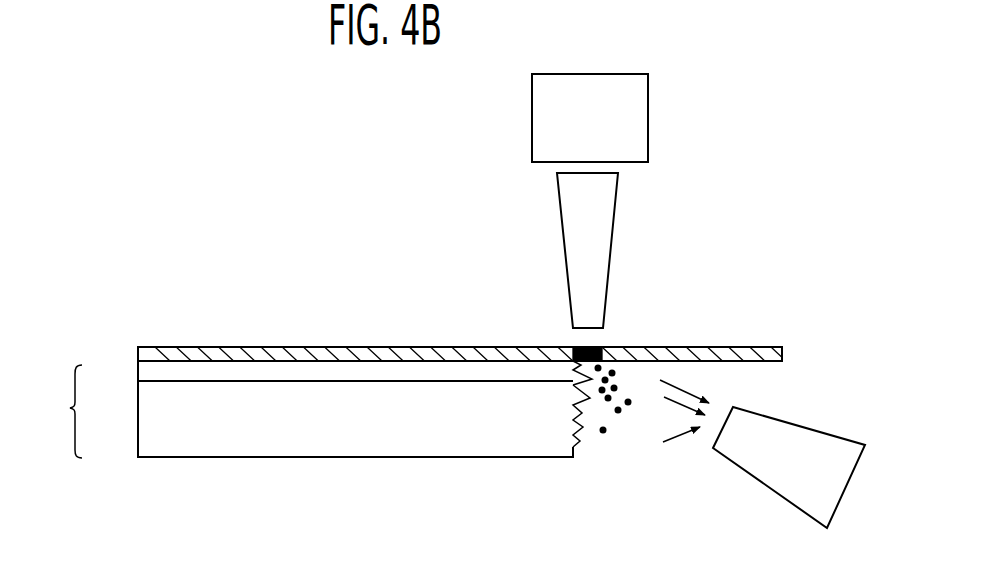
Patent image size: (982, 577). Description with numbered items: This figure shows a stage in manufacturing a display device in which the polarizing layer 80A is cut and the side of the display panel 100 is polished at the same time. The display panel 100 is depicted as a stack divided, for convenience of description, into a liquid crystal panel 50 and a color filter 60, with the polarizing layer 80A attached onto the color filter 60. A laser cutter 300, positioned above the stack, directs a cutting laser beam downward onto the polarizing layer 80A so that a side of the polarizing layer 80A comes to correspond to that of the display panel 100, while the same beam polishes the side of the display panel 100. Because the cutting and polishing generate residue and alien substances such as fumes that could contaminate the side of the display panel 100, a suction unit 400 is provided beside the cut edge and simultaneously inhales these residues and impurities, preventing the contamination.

The laser cutter 300 is at (532, 118).
The polarizing layer 80A is at (138, 352).
The display panel 100 is at (315, 410).
The color filter 60 is at (143, 372).
The liquid crystal panel 50 is at (143, 436).
The suction unit 400 is at (777, 493).